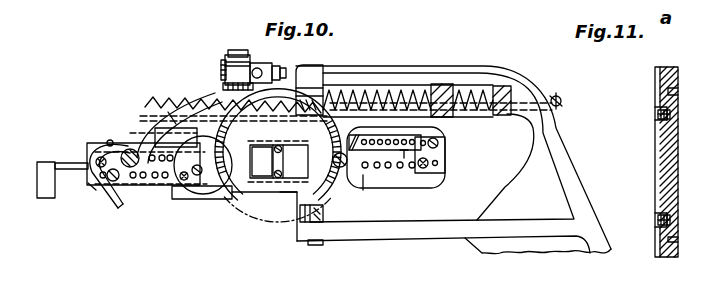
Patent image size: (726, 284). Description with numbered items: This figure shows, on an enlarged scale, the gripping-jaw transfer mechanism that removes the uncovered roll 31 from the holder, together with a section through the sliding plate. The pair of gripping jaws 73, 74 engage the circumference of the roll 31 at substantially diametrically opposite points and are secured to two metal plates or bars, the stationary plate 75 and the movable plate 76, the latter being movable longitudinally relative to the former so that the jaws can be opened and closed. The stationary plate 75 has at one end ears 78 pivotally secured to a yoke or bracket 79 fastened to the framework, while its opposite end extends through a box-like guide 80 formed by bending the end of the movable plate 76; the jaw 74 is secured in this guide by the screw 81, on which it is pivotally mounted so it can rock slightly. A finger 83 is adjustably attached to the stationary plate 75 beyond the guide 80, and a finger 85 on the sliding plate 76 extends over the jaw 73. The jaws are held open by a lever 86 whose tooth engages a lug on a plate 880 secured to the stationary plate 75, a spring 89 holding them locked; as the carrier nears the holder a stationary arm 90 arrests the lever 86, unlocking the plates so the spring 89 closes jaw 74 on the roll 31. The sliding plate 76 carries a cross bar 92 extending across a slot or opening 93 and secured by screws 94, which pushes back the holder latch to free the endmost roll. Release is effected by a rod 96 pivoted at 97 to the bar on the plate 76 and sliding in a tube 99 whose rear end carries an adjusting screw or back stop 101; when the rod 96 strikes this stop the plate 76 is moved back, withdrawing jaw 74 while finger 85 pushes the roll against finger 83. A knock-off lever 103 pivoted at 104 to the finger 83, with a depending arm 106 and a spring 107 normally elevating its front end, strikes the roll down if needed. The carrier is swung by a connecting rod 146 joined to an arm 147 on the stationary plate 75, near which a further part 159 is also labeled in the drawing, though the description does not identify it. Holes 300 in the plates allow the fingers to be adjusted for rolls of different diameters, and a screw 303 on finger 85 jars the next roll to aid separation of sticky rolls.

In FIG. 10, the uncovered roll 31 is at (252, 218).
In FIG. 10, the gripping jaw 73 is at (330, 185).
In FIG. 10, the gripping jaw 74 is at (226, 204).
In FIG. 10, the stationary plate 75 is at (254, 187).
In FIG. 11A, the stationary plate 75 is at (678, 74).
In FIG. 10, the movable plate 76 is at (441, 162).
In FIG. 10, the ears 78 is at (302, 92).
In FIG. 10, the yoke or bracket 79 is at (404, 67).
In FIG. 10, the box-like guide 80 is at (173, 197).
In FIG. 10, the screw 81 is at (214, 190).
In FIG. 10, the finger 83 is at (155, 133).
In FIG. 10, the finger 85 is at (374, 167).
In FIG. 10, the lever 86 is at (75, 158).
In FIG. 10, the spring 89 is at (353, 92).
In FIG. 10, the stationary arm 90 is at (43, 162).
In FIG. 10, the cross bar 92 is at (279, 161).
In FIG. 11A, the cross bar 92 is at (657, 150).
In FIG. 10, the slot or opening 93 is at (252, 174).
In FIG. 10, the screws 94 is at (277, 157).
In FIG. 11A, the screws 94 is at (657, 116).
In FIG. 10, the rod 96 is at (245, 161).
In FIG. 10, the pivot 97 is at (172, 118).
In FIG. 10, the tube 99 is at (470, 115).
In FIG. 10, the adjusting screw or back stop 101 is at (559, 99).
In FIG. 10, the knock-off lever 103 is at (210, 103).
In FIG. 10, the pivot 104 is at (132, 147).
In FIG. 10, the depending arm 106 is at (92, 192).
In FIG. 10, the spring 107 is at (110, 140).
In FIG. 10, the connecting rod 146 is at (287, 56).
In FIG. 10, the arm 147 is at (237, 82).
In FIG. 10, the valve flange 159 is at (238, 78).
In FIG. 10, the holes 300 is at (146, 184).
In FIG. 10, the screw 303 is at (365, 165).
In FIG. 10, the plate 880 is at (90, 187).